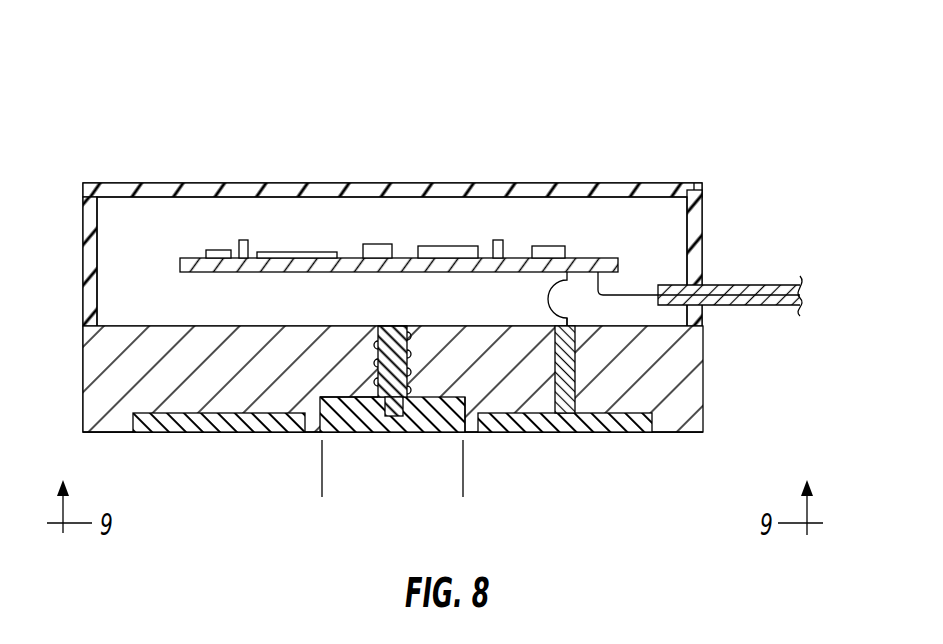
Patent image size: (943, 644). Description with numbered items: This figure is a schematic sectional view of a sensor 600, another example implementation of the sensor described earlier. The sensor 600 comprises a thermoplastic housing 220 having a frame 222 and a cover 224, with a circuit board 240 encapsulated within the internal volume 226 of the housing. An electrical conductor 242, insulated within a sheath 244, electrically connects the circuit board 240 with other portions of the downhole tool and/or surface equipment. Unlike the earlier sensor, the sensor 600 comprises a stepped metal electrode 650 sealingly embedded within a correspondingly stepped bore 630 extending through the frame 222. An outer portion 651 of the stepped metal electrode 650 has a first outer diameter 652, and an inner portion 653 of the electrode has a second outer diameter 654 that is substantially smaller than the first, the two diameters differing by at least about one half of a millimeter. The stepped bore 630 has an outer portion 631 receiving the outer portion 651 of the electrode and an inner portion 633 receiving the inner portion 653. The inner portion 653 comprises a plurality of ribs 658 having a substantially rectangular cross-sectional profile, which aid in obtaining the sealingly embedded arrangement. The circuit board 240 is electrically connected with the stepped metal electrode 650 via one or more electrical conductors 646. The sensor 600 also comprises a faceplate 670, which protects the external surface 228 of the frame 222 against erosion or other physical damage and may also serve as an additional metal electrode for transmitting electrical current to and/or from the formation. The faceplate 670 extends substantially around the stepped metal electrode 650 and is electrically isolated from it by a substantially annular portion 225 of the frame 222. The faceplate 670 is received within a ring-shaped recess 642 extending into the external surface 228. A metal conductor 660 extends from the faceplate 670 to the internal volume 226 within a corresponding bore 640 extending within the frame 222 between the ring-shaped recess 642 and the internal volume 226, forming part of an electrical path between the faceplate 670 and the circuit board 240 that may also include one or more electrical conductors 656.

The sensor 600 is at (212, 88).
The thermoplastic housing 220 is at (703, 212).
The frame 222 is at (703, 393).
The cover 224 is at (575, 183).
The substantially annular portion 225 is at (315, 433).
The internal volume 226 is at (652, 222).
The external surface 228 is at (673, 435).
The circuit board 240 is at (197, 257).
The electrical conductor 242 is at (715, 307).
The sheath 244 is at (772, 307).
The stepped bore 630 is at (432, 376).
The outer portion of the stepped bore 631 is at (330, 397).
The inner portion of the stepped bore 633 is at (385, 342).
The bore 640 is at (557, 328).
The ring-shaped recess 642 is at (480, 420).
The electrical conductors 646 is at (378, 262).
The stepped metal electrode 650 is at (393, 416).
The outer portion of the stepped metal electrode 651 is at (463, 400).
The first outer diameter 652 is at (463, 487).
The inner portion of the stepped metal electrode 653 is at (375, 345).
The second outer diameter 654 is at (390, 433).
The electrical conductors 656 is at (550, 262).
The ribs 658 is at (407, 350).
The metal conductor 660 is at (576, 383).
The faceplate 670 is at (200, 422).